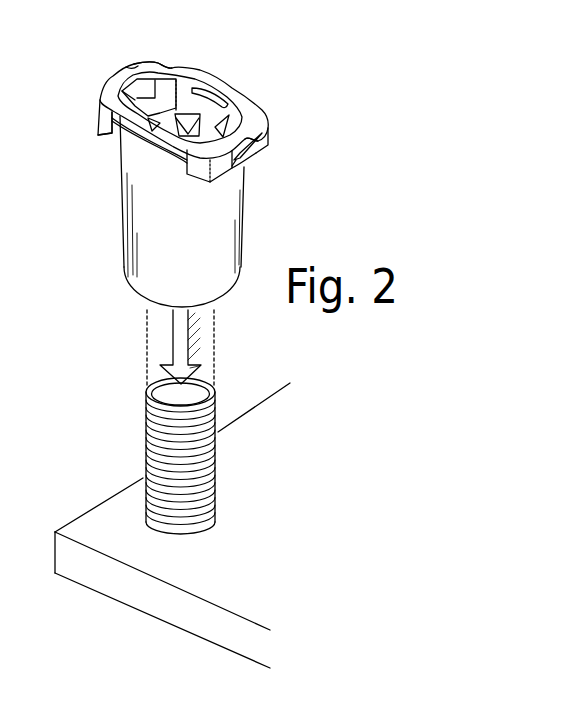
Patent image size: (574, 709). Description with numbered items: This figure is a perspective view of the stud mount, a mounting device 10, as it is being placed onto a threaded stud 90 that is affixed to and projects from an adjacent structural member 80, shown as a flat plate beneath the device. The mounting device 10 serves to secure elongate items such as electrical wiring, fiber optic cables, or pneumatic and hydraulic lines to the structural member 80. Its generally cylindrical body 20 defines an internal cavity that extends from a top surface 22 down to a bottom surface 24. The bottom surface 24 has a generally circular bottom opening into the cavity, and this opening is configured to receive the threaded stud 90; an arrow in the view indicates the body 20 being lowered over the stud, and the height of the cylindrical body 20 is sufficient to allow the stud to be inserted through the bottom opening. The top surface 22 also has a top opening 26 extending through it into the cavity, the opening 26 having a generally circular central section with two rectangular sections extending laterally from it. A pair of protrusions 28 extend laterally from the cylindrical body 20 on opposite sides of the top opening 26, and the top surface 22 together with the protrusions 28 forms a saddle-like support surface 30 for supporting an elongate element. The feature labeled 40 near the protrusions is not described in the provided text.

The mounting device 10 is at (252, 58).
The cylindrical body 20 is at (122, 239).
The top surface 22 is at (258, 108).
The bottom surface 24 is at (157, 308).
The top opening 26 is at (198, 110).
The protrusions 28 is at (137, 63).
The support surface 30 is at (167, 66).
The tab 40 is at (122, 90).
The structural member 80 is at (88, 525).
The threaded stud 90 is at (145, 423).